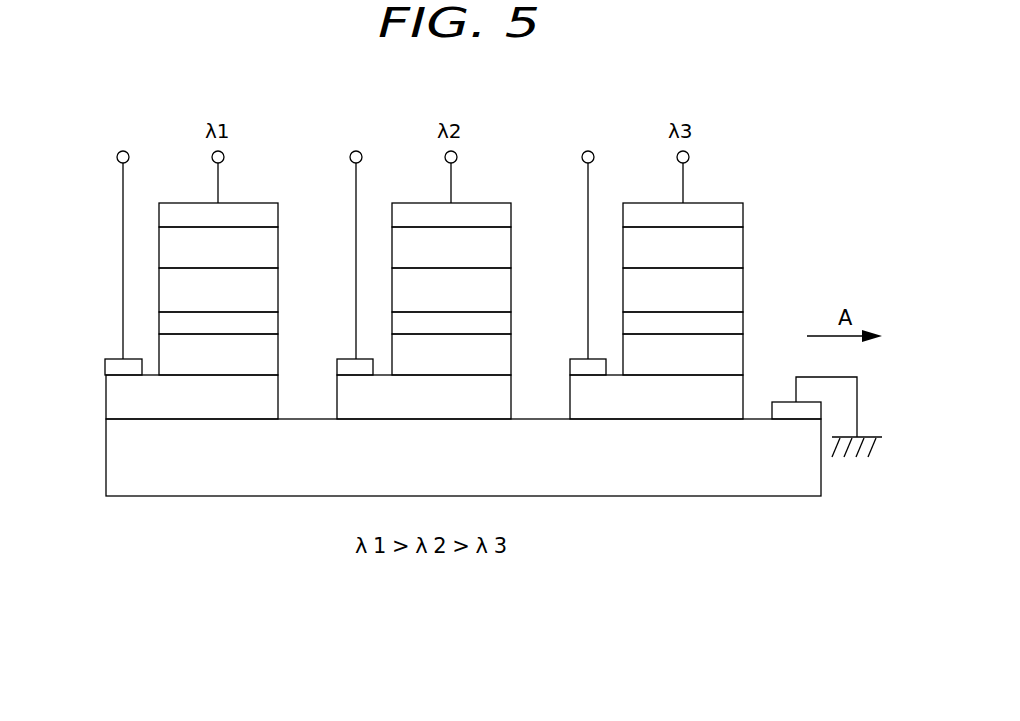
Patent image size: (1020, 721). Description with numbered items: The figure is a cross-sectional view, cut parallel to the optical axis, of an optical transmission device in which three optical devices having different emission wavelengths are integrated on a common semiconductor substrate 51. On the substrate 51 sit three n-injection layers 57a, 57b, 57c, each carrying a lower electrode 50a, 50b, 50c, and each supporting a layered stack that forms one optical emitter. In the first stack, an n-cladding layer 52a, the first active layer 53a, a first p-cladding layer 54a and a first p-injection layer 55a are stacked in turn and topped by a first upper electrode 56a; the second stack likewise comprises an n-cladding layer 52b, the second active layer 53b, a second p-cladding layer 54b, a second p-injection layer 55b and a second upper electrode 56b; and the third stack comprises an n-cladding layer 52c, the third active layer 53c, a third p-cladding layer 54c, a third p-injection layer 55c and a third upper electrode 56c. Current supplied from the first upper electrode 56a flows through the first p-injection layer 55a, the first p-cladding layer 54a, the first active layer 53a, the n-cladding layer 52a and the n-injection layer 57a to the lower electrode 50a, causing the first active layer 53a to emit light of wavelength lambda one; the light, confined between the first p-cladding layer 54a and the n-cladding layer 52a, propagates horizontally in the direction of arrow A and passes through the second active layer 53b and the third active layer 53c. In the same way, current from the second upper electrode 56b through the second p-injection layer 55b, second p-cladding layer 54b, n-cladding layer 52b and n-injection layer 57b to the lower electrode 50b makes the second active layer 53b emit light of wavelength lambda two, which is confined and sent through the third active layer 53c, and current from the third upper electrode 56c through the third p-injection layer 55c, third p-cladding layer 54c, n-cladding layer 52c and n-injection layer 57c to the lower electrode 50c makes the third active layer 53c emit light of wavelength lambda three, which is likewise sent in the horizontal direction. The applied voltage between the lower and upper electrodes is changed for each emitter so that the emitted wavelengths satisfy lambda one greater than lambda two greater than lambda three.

The lower electrode 50a is at (108, 367).
The lower electrode 50b is at (339, 369).
The lower electrode 50c is at (573, 369).
The semiconductor substrate 51 is at (722, 496).
The n-cladding layer 52a is at (162, 354).
The n-cladding layer 52b is at (393, 354).
The n-cladding layer 52c is at (625, 354).
The active layer No. 1 53a is at (279, 325).
The active layer No. 2 53b is at (512, 325).
The active layer No. 3 53c is at (744, 325).
The p-cladding layer No. 1 54a is at (279, 289).
The p-cladding layer No. 2 54b is at (512, 289).
The p-cladding layer No. 3 54c is at (744, 289).
The p-injection layer No. 1 55a is at (279, 249).
The p-injection layer No. 2 55b is at (512, 249).
The p-injection layer No. 3 55c is at (744, 249).
The upper electrode No. 1 56a is at (279, 217).
The upper electrode No. 2 56b is at (512, 217).
The upper electrode No. 3 56c is at (744, 217).
The n-injection layer 57a is at (275, 408).
The n-injection layer 57b is at (508, 408).
The n-injection layer 57c is at (742, 397).